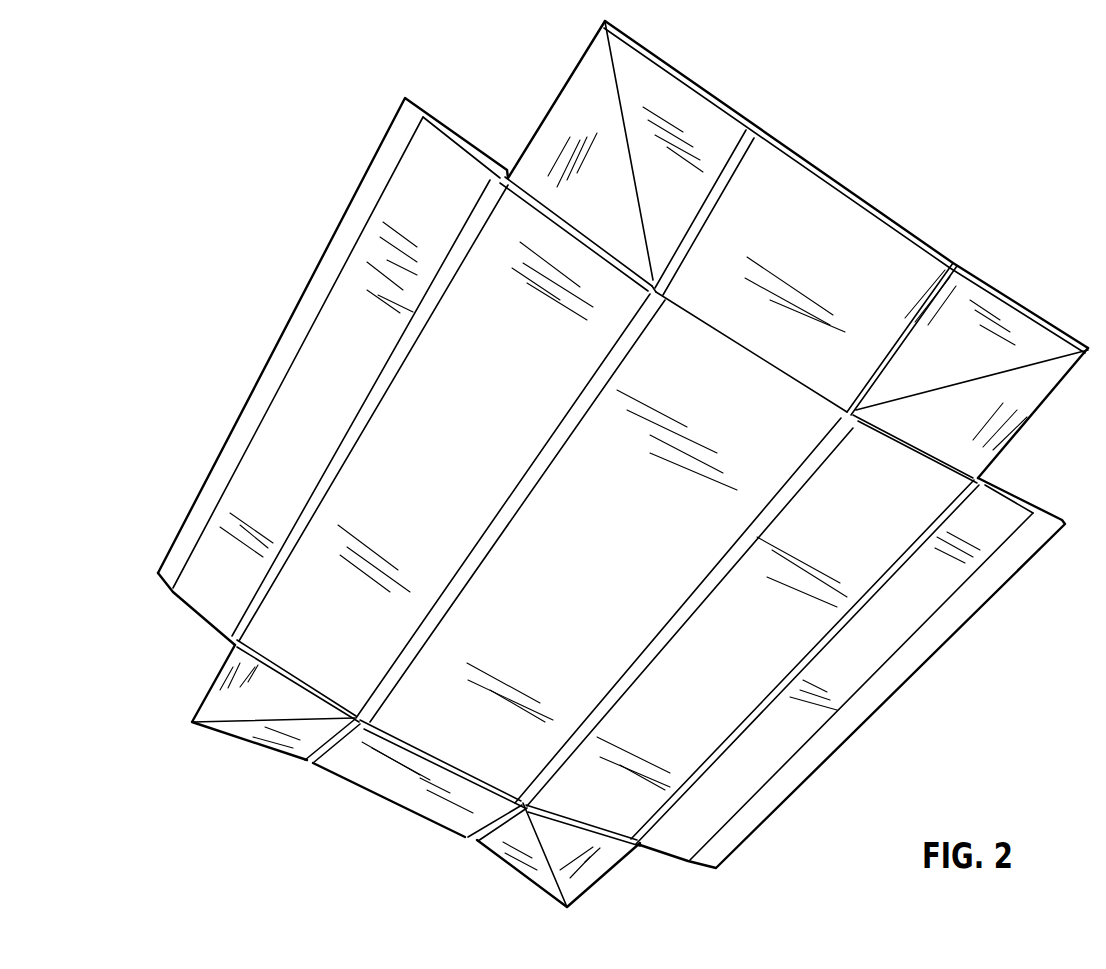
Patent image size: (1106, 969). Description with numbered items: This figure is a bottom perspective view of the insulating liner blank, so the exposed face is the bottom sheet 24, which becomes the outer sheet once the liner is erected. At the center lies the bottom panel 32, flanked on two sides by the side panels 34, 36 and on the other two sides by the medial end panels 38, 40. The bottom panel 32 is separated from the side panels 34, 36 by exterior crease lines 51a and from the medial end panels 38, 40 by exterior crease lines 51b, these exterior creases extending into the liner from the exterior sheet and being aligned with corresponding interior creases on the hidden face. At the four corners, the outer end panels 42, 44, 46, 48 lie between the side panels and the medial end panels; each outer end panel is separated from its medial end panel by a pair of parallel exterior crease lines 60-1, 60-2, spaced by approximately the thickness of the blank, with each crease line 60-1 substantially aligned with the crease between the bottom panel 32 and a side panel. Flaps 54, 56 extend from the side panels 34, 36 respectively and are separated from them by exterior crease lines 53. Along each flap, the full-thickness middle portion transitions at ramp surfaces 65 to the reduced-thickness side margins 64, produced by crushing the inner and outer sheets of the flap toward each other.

The bottom sheet 24 is at (585, 545).
The bottom panel 32 is at (648, 513).
The side panel 34 is at (868, 525).
The side panel 36 is at (508, 390).
The medial end panel 38 is at (840, 278).
The medial end panel 40 is at (400, 791).
The outer end panel 42 is at (613, 217).
The outer end panel 44 is at (953, 430).
The outer end panel 46 is at (293, 711).
The outer end panel 48 is at (573, 854).
The exterior crease line 51a is at (503, 515).
The exterior crease line 51b is at (742, 350).
The exterior crease line 53 is at (345, 457).
The flap 54 is at (883, 653).
The flap 56 is at (367, 368).
The exterior crease line 60-1 is at (735, 183).
The exterior crease line 60-2 is at (683, 230).
The side margin 64 is at (308, 310).
The ramp surface 65 is at (273, 408).